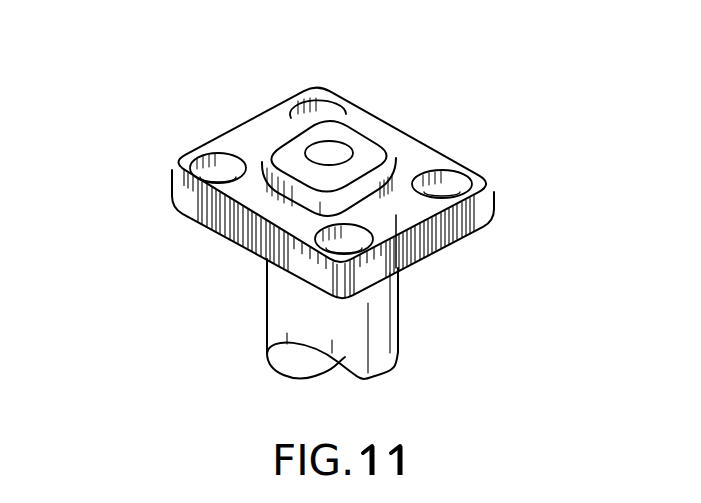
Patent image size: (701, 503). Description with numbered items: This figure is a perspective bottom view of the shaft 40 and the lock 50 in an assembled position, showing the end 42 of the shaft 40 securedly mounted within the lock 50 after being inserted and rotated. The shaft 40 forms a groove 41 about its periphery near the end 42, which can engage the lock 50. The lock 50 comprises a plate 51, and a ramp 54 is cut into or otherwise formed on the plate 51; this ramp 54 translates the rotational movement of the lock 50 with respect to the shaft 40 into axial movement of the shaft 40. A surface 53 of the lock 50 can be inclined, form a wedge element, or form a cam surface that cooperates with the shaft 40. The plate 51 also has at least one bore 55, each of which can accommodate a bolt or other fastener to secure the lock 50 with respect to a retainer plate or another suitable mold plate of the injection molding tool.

The shaft 40 is at (267, 295).
The groove 41 is at (392, 208).
The end 42 is at (368, 138).
The lock 50 is at (592, 273).
The plate 51 is at (440, 236).
The surface 53 is at (190, 220).
The ramp 54 is at (392, 208).
The bore 55 is at (213, 162).